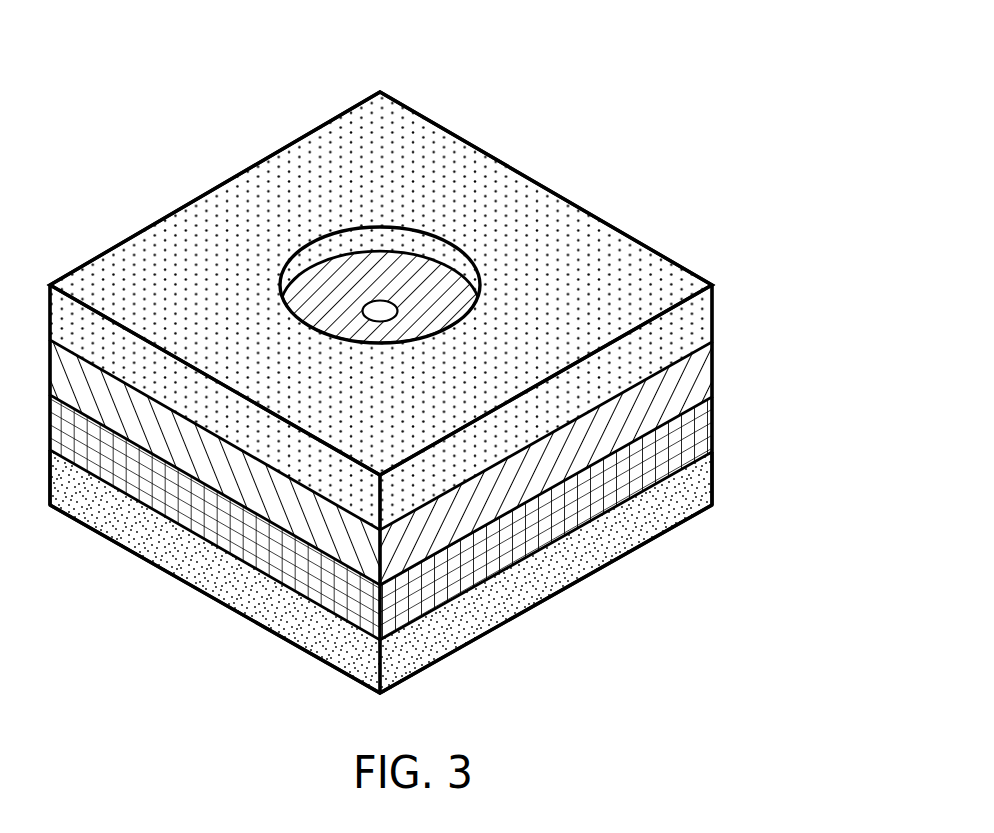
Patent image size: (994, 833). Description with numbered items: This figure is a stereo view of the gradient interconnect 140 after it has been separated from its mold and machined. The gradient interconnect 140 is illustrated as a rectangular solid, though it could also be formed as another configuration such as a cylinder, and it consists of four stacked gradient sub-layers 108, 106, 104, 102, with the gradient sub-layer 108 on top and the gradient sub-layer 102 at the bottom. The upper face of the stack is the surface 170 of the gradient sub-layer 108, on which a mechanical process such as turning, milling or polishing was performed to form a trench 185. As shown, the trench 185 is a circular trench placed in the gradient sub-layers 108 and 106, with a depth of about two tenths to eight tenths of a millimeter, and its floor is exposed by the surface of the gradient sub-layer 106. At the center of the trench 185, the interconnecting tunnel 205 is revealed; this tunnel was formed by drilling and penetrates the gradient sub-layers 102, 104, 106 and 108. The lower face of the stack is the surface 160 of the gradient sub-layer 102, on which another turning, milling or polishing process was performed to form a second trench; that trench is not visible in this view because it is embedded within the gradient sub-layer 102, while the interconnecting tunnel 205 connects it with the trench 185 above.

The gradient interconnect 140 is at (652, 72).
The gradient sub-layer 108 is at (698, 320).
The gradient sub-layer 106 is at (698, 375).
The gradient sub-layer 104 is at (698, 430).
The gradient sub-layer 102 is at (698, 485).
The surface 170 is at (145, 283).
The surface 160 is at (123, 545).
The trench 185 is at (445, 236).
The interconnecting tunnel 205 is at (385, 302).